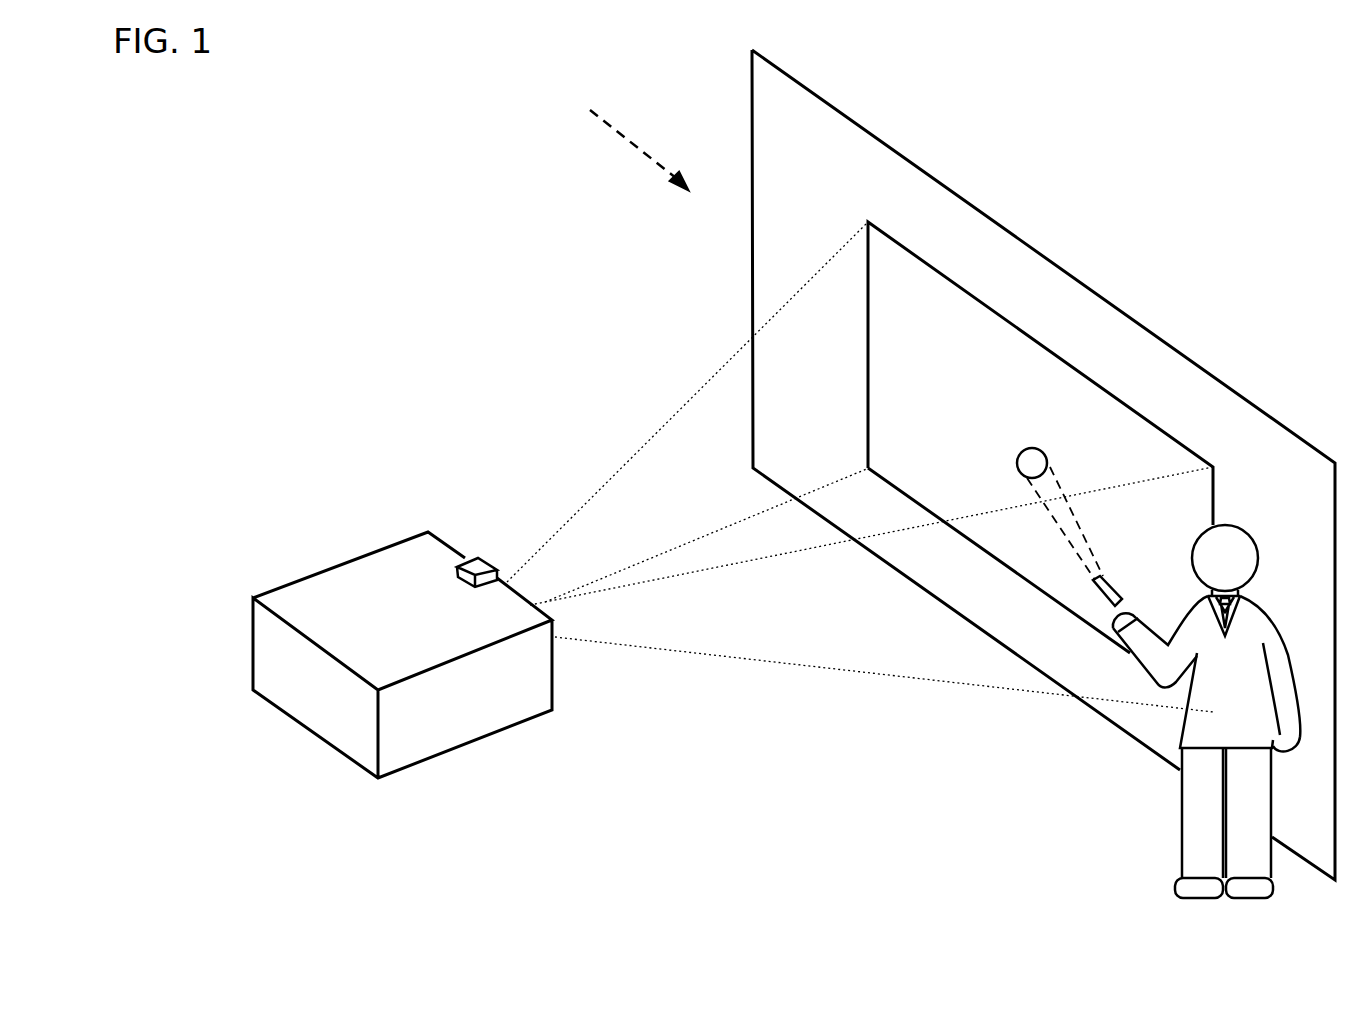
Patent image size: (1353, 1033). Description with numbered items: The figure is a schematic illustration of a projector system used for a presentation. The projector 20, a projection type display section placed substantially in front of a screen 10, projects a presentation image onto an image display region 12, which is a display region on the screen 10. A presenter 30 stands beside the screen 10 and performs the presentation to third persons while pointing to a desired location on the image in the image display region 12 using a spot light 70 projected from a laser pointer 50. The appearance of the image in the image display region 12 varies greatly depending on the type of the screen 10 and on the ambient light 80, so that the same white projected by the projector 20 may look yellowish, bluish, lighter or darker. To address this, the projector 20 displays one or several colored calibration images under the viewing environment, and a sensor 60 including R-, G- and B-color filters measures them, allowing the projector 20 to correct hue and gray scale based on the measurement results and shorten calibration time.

The screen 10 is at (1085, 283).
The image display region 12 is at (1083, 372).
The projector 20 is at (530, 702).
The presenter 30 is at (1232, 525).
The laser pointer 50 is at (1112, 596).
The sensor 60 is at (478, 567).
The spot light 70 is at (1045, 458).
The ambient light 80 is at (608, 124).